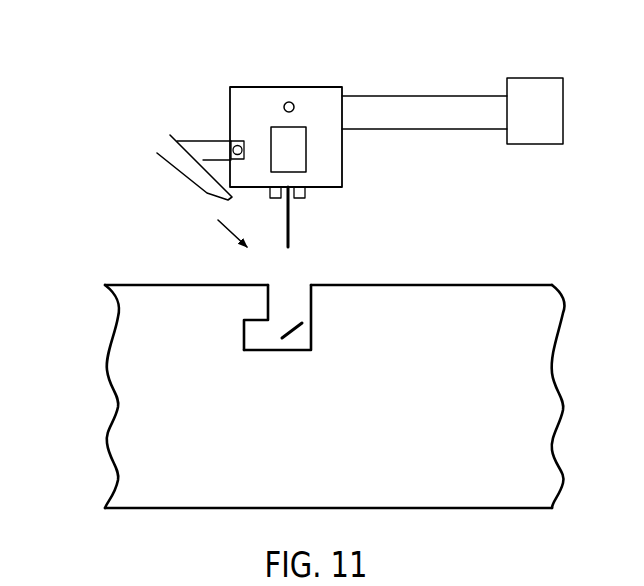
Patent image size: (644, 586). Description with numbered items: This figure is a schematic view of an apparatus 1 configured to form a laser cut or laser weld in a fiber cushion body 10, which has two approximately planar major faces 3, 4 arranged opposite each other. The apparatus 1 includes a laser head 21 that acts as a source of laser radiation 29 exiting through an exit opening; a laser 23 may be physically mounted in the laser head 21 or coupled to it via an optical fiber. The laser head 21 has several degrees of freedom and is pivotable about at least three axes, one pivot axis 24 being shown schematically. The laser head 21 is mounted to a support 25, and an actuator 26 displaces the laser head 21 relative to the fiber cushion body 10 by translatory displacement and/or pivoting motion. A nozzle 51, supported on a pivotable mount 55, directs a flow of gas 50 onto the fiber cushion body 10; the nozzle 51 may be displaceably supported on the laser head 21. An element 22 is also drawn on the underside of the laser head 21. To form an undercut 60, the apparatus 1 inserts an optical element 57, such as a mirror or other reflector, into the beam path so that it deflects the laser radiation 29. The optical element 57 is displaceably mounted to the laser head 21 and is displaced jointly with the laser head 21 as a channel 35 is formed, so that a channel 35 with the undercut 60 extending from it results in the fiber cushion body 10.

The apparatus 1 is at (84, 49).
The laser head 21 is at (274, 81).
The pivot axis 24 is at (290, 102).
The support 25 is at (426, 96).
The actuator 26 is at (534, 78).
The laser 23 is at (306, 145).
The sensor 22 is at (278, 199).
The laser radiation 29 is at (292, 222).
The mount 55 is at (198, 141).
The nozzle 51 is at (199, 189).
The flow of gas 50 is at (236, 239).
The fiber cushion body 10 is at (106, 281).
The major face 3 is at (132, 284).
The major face 4 is at (165, 509).
The undercut 60 is at (252, 340).
The channel 35 is at (313, 353).
The optical element 57 is at (302, 323).